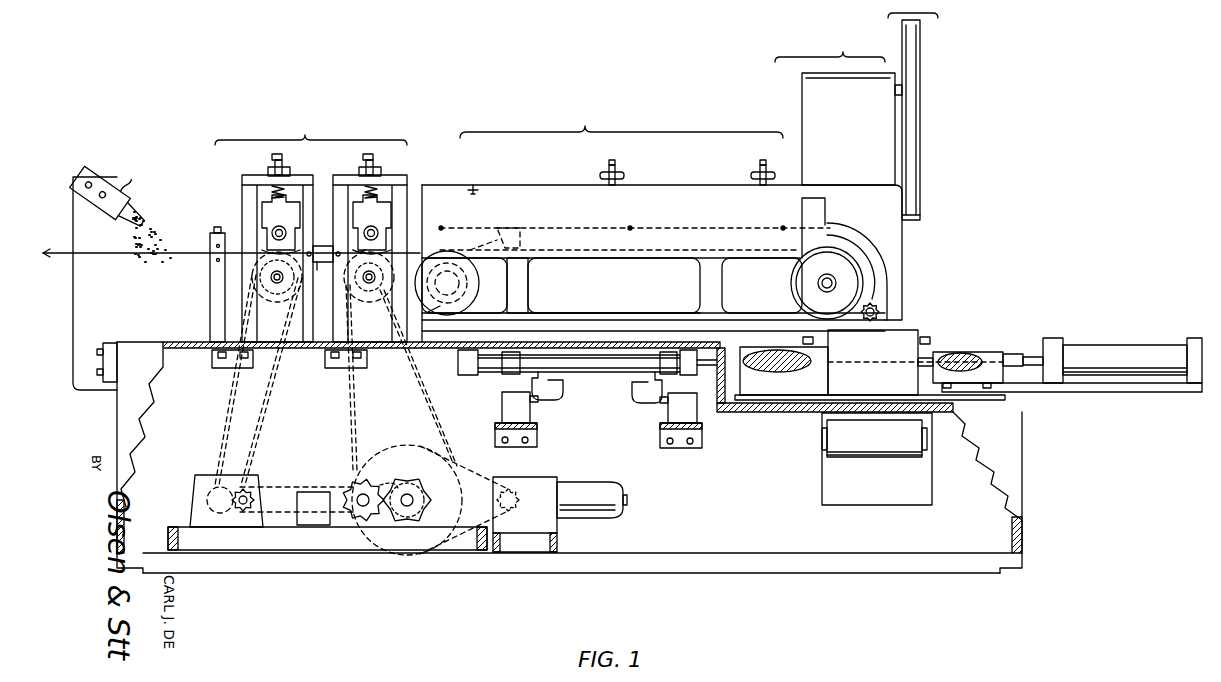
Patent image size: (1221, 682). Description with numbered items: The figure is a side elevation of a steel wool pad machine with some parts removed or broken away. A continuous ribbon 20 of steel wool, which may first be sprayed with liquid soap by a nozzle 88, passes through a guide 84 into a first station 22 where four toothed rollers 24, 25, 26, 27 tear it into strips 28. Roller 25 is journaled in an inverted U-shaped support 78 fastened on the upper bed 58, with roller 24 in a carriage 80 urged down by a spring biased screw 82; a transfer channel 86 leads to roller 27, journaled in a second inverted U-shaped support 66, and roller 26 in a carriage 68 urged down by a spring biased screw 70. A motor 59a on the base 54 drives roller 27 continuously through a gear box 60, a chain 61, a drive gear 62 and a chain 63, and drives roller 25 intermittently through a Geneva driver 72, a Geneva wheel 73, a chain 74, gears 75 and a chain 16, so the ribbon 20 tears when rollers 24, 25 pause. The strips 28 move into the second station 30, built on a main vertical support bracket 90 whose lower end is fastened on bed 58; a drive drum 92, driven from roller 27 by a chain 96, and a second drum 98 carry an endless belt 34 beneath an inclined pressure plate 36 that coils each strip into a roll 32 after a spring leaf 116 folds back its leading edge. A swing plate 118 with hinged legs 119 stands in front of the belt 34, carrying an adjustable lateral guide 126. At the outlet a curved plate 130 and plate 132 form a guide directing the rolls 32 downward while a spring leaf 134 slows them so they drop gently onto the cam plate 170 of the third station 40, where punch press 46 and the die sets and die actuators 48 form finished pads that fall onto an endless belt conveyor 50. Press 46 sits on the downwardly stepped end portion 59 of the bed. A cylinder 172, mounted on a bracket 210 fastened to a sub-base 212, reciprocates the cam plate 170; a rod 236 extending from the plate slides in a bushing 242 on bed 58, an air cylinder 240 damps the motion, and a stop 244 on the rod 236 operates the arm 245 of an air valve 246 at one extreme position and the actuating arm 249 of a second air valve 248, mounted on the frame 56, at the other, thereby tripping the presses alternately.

The drive belt 16 is at (258, 440).
The continuous ribbon 20 is at (151, 258).
The first station 22 is at (311, 131).
The toothed roller 24 is at (262, 217).
The toothed roller 25 is at (255, 268).
The toothed roller 26 is at (390, 222).
The toothed roller 27 is at (362, 291).
The strips 28 is at (462, 248).
The second station 30 is at (662, 224).
The rolls 32 is at (878, 310).
The endless belt 34 is at (578, 311).
The inclined pressure plate 36 is at (658, 240).
The third station 40 is at (835, 109).
The punch press 46 is at (893, 128).
The die sets and die actuators 48 is at (930, 347).
The endless belt conveyor 50 is at (865, 460).
The base 54 is at (640, 553).
The frame 56 is at (125, 510).
The upper bed 58 is at (375, 350).
The stepped end portion 59 is at (765, 413).
The motor 59a is at (600, 482).
The gear box 60 is at (535, 478).
The chain 61 is at (475, 473).
The drive gear 62 is at (405, 452).
The chain 63 is at (422, 378).
The inverted U-shaped support 66 is at (407, 176).
The carriage 68 is at (352, 250).
The spring biased screw 70 is at (364, 165).
The Geneva driver 72 is at (372, 512).
The Geneva wheel 73 is at (357, 482).
The chain 74 is at (270, 486).
The gears 75 is at (215, 475).
The inverted U-shaped support 78 is at (242, 180).
The carriage 80 is at (271, 233).
The spring biased screw 82 is at (284, 164).
The guide 84 is at (210, 305).
The transfer channel 86 is at (322, 272).
The nozzle 88 is at (133, 198).
The main vertical support bracket 90 is at (458, 333).
The drive drum 92 is at (470, 287).
The chain 96 is at (432, 319).
The second drum 98 is at (796, 283).
The spring leaf 116 is at (510, 250).
The swing plate 118 is at (676, 192).
The legs 119 is at (529, 290).
The lateral guide 126 is at (826, 214).
The curved plate 130 is at (882, 258).
The plate 132 is at (876, 278).
The spring leaf 134 is at (866, 318).
The cam plate 170 is at (955, 358).
The cylinder 172 is at (1092, 345).
The bracket 210 is at (1112, 387).
The sub-base 212 is at (1005, 398).
The rod 236 is at (760, 356).
The air cylinder 240 is at (458, 362).
The bushing 242 is at (508, 374).
The stop 244 is at (664, 374).
The arm 245 is at (665, 378).
The air valve 246 is at (698, 418).
The second air valve 248 is at (502, 402).
The actuating arm 249 is at (563, 383).